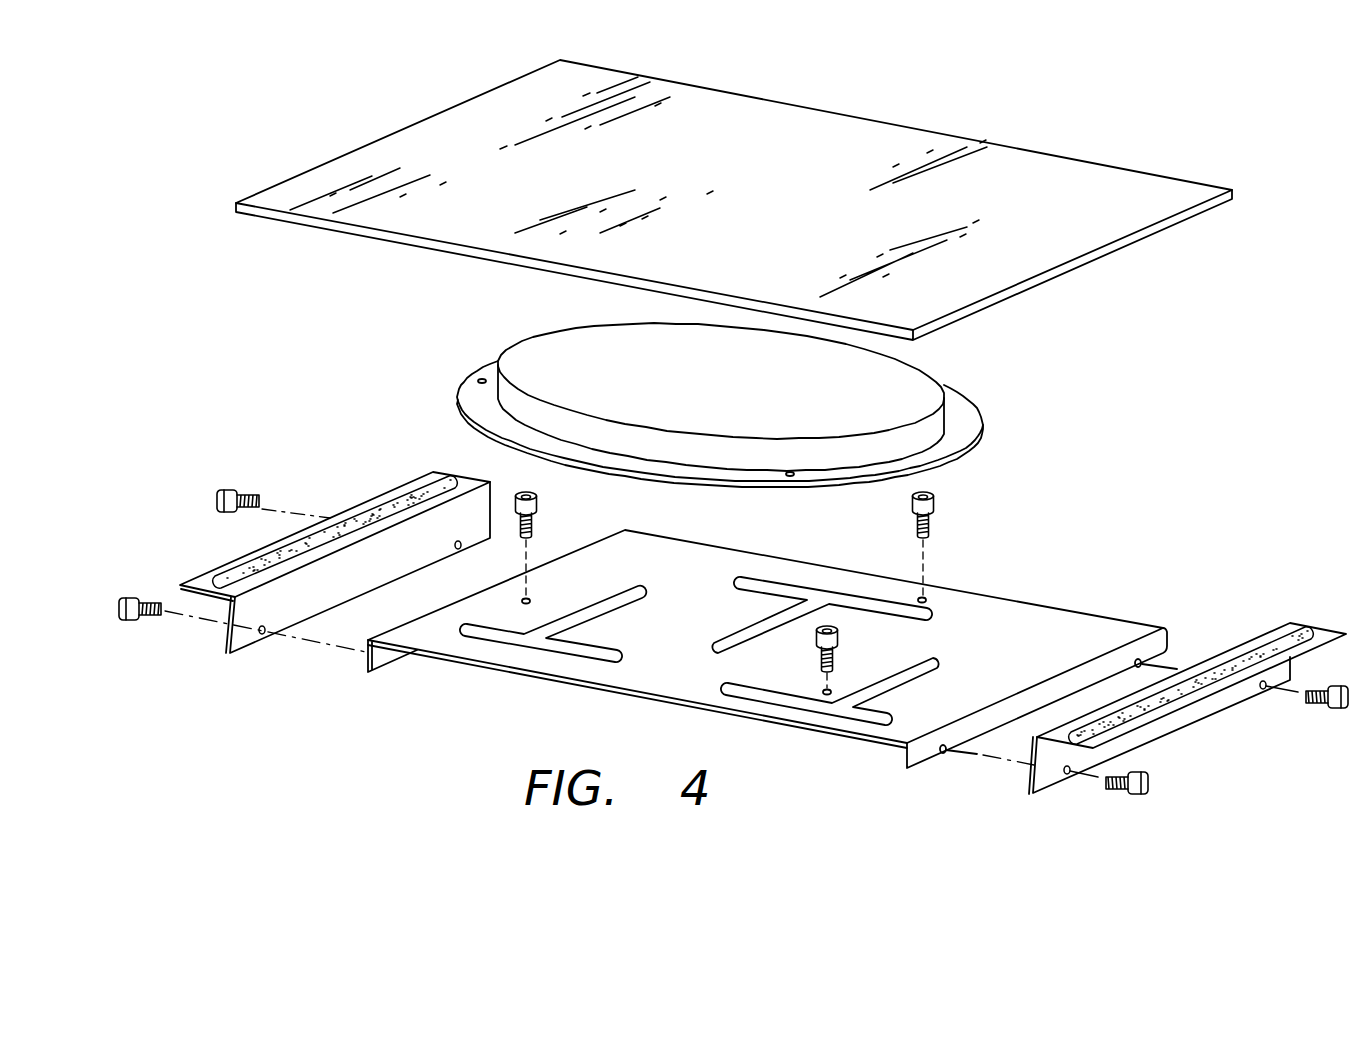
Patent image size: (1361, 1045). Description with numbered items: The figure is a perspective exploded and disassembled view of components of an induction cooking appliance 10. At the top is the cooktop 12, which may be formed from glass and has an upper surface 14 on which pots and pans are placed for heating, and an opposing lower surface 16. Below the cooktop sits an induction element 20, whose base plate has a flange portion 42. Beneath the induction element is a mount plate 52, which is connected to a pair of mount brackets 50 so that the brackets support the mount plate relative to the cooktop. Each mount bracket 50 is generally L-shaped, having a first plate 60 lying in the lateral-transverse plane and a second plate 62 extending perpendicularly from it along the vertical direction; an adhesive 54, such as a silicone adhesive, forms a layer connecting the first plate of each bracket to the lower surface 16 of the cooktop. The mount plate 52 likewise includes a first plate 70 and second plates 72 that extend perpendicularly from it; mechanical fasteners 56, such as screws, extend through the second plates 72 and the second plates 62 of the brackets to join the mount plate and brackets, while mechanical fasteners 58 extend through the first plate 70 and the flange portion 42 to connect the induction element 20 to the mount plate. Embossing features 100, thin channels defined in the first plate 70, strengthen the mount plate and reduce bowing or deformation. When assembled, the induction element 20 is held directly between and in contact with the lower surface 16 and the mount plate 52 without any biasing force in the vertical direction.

The appliance 10 is at (1253, 102).
The cooktop 12 is at (731, 200).
The upper surface 14 is at (310, 187).
The lower surface 16 is at (310, 220).
The induction element 20 is at (747, 405).
The flange portion 42 is at (962, 433).
The mount bracket 50 is at (730, 618).
The mount plate 52 is at (671, 662).
The adhesive 54 is at (413, 497).
The mechanical fastener 56 is at (138, 630).
The mechanical fastener 58 is at (540, 522).
The first plate 60 is at (207, 585).
The second plate 62 is at (240, 635).
The first plate 70 is at (430, 633).
The second plate 72 is at (363, 653).
The embossing features 100 is at (617, 590).